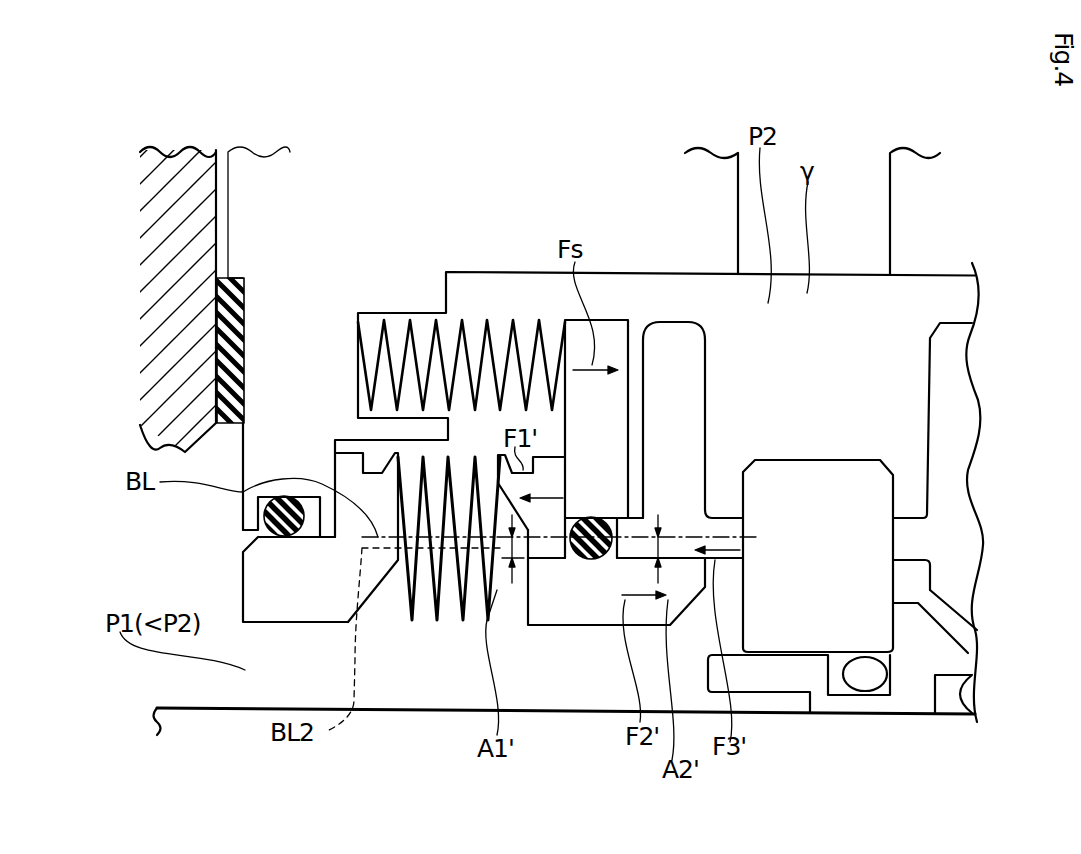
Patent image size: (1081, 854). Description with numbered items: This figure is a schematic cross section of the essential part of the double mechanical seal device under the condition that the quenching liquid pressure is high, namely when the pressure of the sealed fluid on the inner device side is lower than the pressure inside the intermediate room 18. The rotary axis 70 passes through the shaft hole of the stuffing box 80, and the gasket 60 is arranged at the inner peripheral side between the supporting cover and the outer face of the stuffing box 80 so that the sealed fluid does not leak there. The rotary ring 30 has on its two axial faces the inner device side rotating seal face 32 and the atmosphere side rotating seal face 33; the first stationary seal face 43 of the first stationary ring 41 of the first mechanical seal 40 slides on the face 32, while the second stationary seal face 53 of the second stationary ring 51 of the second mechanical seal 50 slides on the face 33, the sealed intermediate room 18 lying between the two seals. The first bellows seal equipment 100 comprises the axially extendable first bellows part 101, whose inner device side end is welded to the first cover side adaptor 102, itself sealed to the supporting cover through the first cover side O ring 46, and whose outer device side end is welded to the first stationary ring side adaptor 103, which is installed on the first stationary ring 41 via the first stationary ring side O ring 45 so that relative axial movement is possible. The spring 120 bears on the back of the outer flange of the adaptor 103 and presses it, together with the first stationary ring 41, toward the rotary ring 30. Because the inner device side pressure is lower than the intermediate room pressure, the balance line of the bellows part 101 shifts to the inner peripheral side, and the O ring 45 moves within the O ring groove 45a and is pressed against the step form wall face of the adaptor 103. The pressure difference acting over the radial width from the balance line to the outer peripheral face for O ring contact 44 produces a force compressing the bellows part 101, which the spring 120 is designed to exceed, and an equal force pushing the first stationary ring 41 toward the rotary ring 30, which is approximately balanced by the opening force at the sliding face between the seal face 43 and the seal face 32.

The stuffing box 80 is at (175, 185).
The gasket 60 is at (220, 328).
The spring 120 is at (430, 338).
The first stationary ring side adaptor 103 is at (605, 333).
The first mechanical seal 40 is at (667, 310).
The first stationary ring 41 is at (692, 355).
The inner device side rotating seal face 32 is at (712, 490).
The intermediate room 18 is at (864, 297).
The second mechanical seal 50 is at (956, 316).
The second stationary ring 51 is at (957, 390).
The second stationary seal face 53 is at (893, 520).
The first stationary seal face 43 is at (748, 525).
The first cover side O ring 46 is at (262, 512).
The first cover side adaptor 102 is at (258, 573).
The first bellows seal equipment 100 is at (401, 636).
The first bellows part 101 is at (425, 605).
The outer peripheral face for O ring contact 44 is at (548, 625).
The first stationary ring side O ring 45 is at (575, 570).
The O ring groove 45a is at (602, 620).
The rotary ring 30 is at (812, 615).
The atmosphere side rotating seal face 33 is at (895, 583).
The rotary axis 70 is at (188, 708).